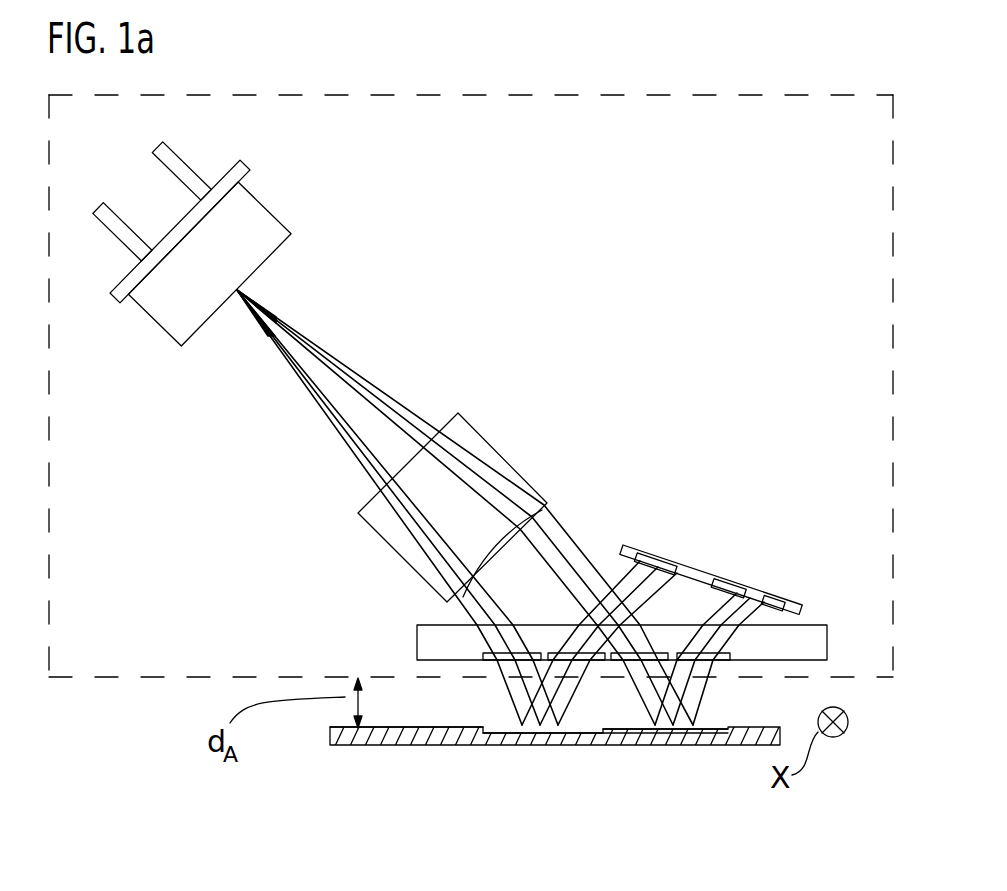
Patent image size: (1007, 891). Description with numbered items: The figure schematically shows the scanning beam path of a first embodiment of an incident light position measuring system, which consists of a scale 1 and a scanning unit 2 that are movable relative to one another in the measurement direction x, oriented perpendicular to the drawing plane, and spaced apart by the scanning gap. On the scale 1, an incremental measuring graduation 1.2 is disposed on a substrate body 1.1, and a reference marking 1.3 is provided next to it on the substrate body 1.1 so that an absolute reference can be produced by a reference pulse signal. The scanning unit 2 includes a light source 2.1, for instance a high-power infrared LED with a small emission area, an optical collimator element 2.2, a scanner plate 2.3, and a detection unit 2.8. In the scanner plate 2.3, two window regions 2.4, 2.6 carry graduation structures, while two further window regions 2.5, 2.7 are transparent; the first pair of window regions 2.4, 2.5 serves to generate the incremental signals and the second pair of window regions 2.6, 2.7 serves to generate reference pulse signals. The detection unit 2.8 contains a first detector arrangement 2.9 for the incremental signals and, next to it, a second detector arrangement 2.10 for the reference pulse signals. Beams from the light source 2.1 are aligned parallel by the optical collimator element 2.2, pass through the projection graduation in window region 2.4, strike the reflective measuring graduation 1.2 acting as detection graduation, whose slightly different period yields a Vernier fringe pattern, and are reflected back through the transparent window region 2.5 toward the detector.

The scale 1 is at (321, 744).
The substrate body 1.1 is at (427, 745).
The measuring graduation 1.2 is at (545, 745).
The reference marking 1.3 is at (700, 745).
The scanning unit 2 is at (121, 684).
The light source 2.1 is at (240, 248).
The optical collimator element 2.2 is at (480, 453).
The scanner plate 2.3 is at (437, 637).
The window region 2.4 is at (513, 655).
The window region 2.5 is at (560, 655).
The window region 2.6 is at (632, 655).
The window region 2.7 is at (697, 655).
The detection unit 2.8 is at (717, 578).
The first detector arrangement 2.9 is at (678, 566).
The second detector arrangement 2.10 is at (787, 599).